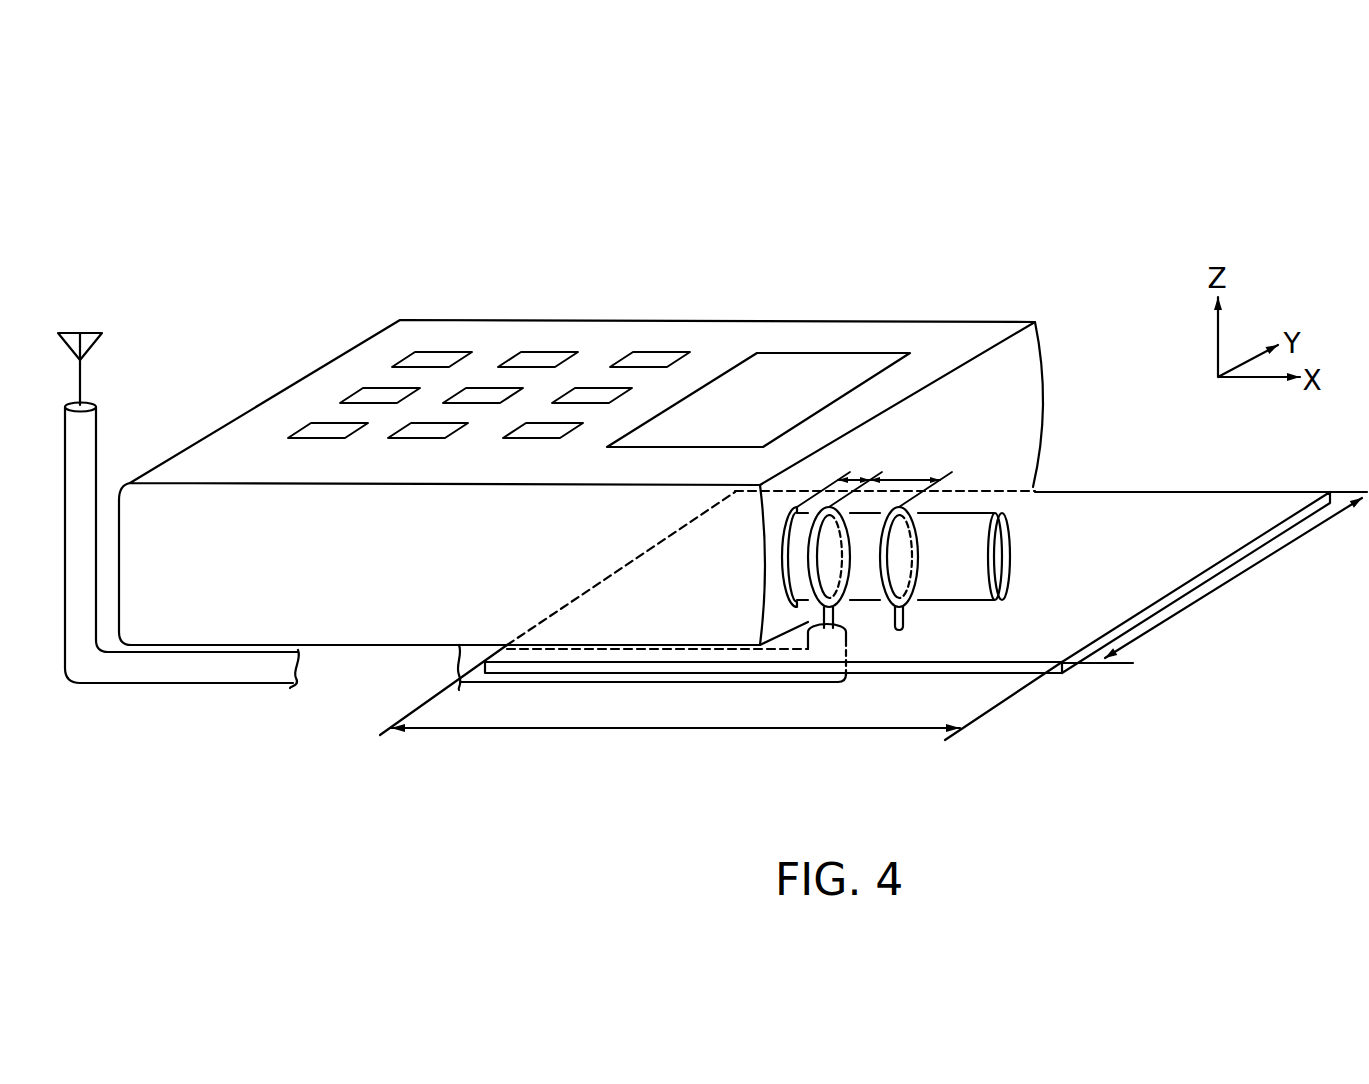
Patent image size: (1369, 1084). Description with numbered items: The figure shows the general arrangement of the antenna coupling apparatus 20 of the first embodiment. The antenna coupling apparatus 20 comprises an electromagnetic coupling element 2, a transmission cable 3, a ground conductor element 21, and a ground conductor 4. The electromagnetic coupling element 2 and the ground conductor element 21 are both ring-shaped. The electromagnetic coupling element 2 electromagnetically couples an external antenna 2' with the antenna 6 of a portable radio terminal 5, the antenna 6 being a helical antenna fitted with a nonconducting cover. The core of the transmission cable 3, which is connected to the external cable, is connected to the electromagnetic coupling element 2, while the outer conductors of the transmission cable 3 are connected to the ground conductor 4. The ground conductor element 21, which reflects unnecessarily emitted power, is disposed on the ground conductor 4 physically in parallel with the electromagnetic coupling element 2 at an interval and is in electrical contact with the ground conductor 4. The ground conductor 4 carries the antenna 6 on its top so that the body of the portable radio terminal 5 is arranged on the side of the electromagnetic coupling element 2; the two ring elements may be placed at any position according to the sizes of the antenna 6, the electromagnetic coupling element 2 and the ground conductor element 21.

The antenna coupling apparatus 20 is at (1058, 202).
The portable radio terminal 5 is at (700, 337).
The external antenna 2' is at (103, 355).
The transmission cable 3 is at (95, 407).
The ground conductor 4 is at (1175, 505).
The antenna 6 is at (960, 532).
The electromagnetic coupling element 2 is at (850, 613).
The ground conductor element 21 is at (903, 623).